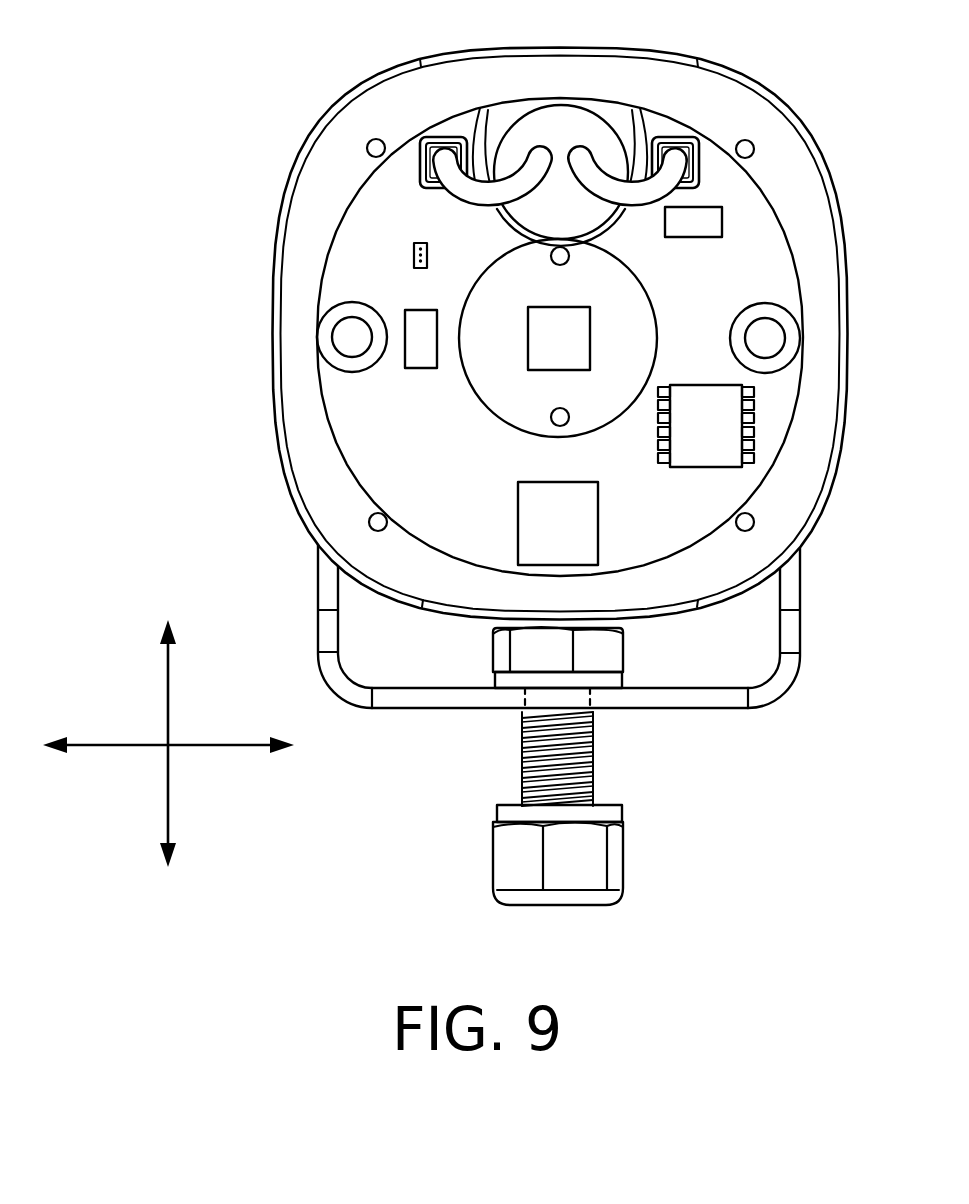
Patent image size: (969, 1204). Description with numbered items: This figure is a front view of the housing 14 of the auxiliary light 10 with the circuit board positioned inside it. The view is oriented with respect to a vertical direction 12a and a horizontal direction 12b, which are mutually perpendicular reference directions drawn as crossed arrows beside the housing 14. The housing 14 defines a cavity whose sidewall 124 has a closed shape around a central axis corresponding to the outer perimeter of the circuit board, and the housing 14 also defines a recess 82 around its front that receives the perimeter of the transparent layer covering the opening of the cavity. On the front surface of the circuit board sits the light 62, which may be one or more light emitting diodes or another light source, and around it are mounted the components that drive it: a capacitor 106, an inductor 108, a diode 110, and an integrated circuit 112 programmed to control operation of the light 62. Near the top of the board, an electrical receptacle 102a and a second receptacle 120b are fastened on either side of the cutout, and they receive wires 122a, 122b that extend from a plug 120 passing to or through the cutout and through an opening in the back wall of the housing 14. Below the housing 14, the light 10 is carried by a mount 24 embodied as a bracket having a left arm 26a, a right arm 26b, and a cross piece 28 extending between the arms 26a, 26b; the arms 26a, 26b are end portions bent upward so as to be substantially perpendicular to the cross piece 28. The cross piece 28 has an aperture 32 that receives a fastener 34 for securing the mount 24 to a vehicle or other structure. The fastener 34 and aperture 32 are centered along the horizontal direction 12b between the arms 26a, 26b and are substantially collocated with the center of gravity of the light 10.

The auxiliary light 10 is at (190, 240).
The vertical direction 12a is at (167, 778).
The horizontal direction 12b is at (117, 743).
The housing 14 is at (297, 352).
The mount 24 is at (675, 750).
The left arm 26a is at (787, 640).
The right arm 26b is at (327, 633).
The cross piece 28 is at (712, 703).
The aperture 32 is at (520, 700).
The fastener 34 is at (585, 850).
The light 62 is at (553, 307).
The recess 82 is at (317, 152).
The electrical receptacle 102a is at (418, 168).
The capacitor 106 is at (414, 257).
The inductor 108 is at (558, 523).
The diode 110 is at (418, 322).
The integrated circuit 112 is at (706, 426).
The plug 120 is at (563, 117).
The second connector 120b is at (705, 175).
The wire 122a is at (463, 183).
The wire 122b is at (633, 200).
The circuit board 124 is at (330, 412).